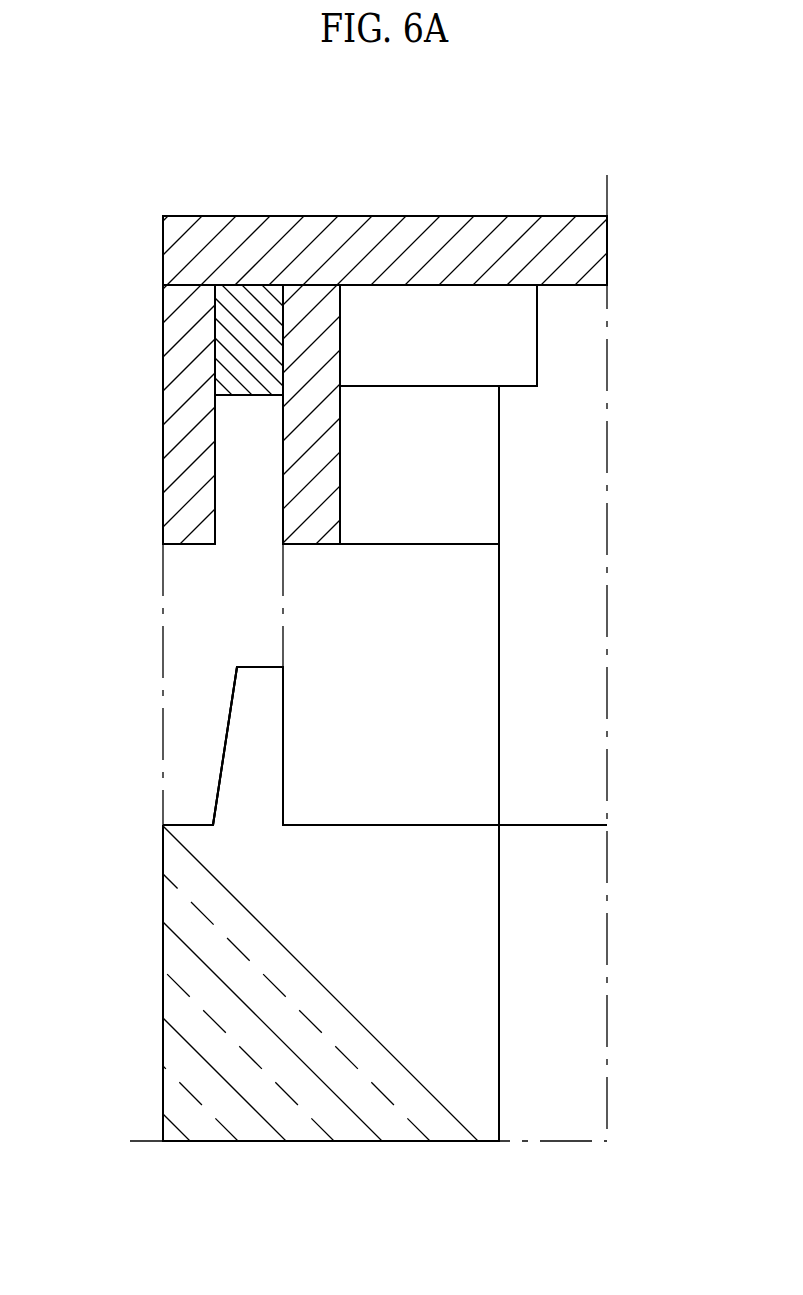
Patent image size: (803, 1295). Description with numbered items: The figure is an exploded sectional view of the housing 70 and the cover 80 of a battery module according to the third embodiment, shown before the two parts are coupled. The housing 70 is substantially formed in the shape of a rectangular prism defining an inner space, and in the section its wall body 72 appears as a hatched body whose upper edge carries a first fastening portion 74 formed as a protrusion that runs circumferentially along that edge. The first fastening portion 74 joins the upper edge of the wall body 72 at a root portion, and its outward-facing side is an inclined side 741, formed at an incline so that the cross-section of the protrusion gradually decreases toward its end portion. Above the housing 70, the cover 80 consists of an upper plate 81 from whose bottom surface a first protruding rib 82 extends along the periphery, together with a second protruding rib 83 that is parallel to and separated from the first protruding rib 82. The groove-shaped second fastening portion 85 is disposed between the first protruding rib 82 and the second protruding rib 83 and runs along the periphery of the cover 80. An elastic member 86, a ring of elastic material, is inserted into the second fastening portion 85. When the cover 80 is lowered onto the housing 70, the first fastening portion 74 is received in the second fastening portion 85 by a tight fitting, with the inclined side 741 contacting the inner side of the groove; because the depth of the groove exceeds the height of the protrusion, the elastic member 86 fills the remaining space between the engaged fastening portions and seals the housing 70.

The housing 70 is at (122, 961).
The wall body 72 is at (476, 956).
The first fastening portion 74 is at (232, 765).
The inclined side 741 is at (232, 693).
The cover 80 is at (141, 199).
The upper plate 81 is at (556, 220).
The first protruding rib 82 is at (168, 344).
The second protruding rib 83 is at (302, 473).
The second fastening portion 85 is at (251, 437).
The elastic member 86 is at (255, 329).